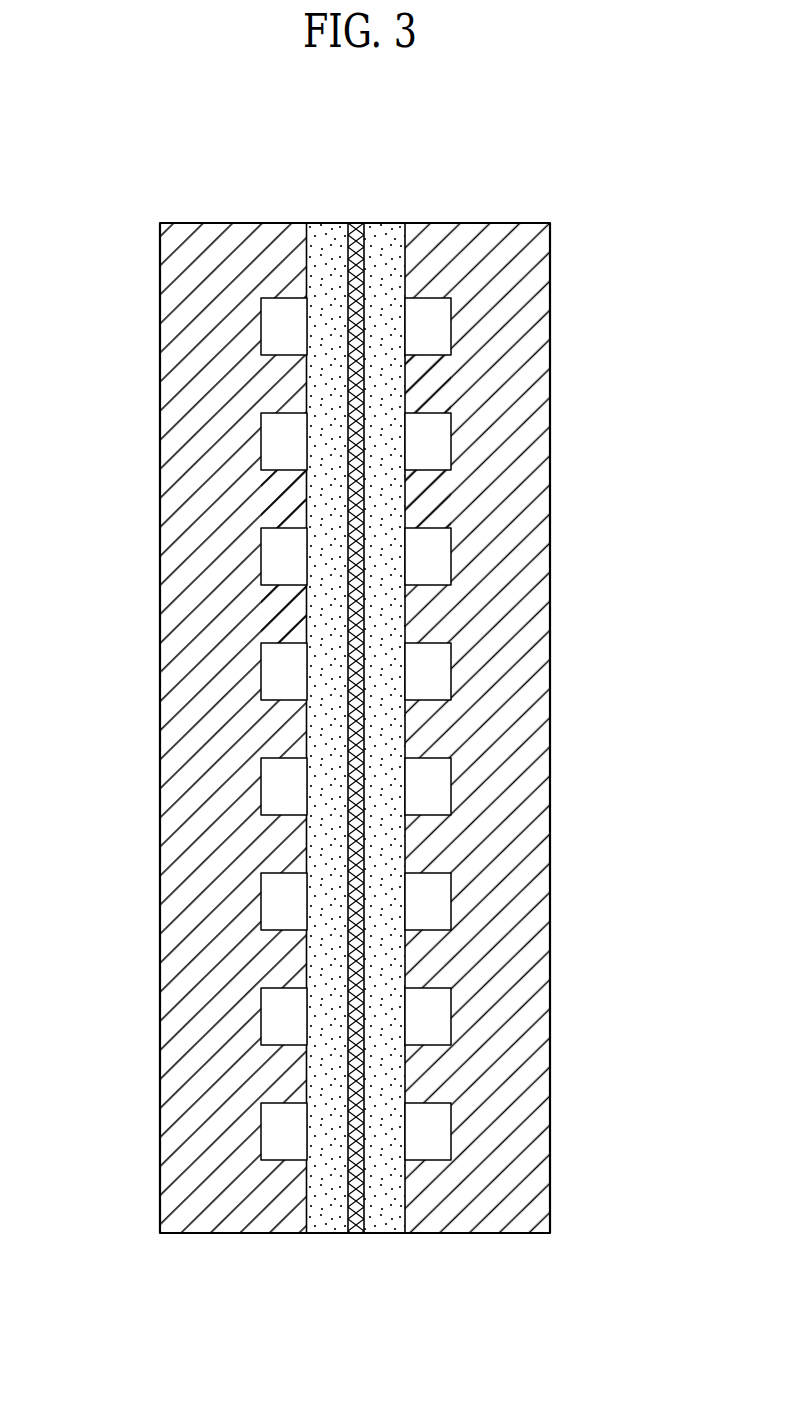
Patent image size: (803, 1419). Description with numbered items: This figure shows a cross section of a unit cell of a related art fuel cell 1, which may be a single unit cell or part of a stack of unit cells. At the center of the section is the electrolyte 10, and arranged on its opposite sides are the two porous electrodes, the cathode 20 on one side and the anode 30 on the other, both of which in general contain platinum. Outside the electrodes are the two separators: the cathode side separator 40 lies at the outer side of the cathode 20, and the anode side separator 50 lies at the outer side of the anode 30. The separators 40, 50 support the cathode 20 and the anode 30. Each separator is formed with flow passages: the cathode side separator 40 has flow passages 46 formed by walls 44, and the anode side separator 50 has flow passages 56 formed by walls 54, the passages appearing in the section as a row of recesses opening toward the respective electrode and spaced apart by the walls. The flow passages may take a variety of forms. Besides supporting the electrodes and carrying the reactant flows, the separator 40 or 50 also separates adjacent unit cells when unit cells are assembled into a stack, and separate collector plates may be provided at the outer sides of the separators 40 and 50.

The fuel cell 1 is at (491, 206).
The electrolyte 10 is at (357, 1242).
The cathode 20 is at (316, 1242).
The anode 30 is at (390, 1243).
The cathode side separator 40 is at (160, 935).
The walls 44 is at (282, 502).
The flow passages 46 is at (273, 1027).
The anode side separator 50 is at (546, 943).
The walls 54 is at (432, 500).
The flow passages 56 is at (433, 1010).